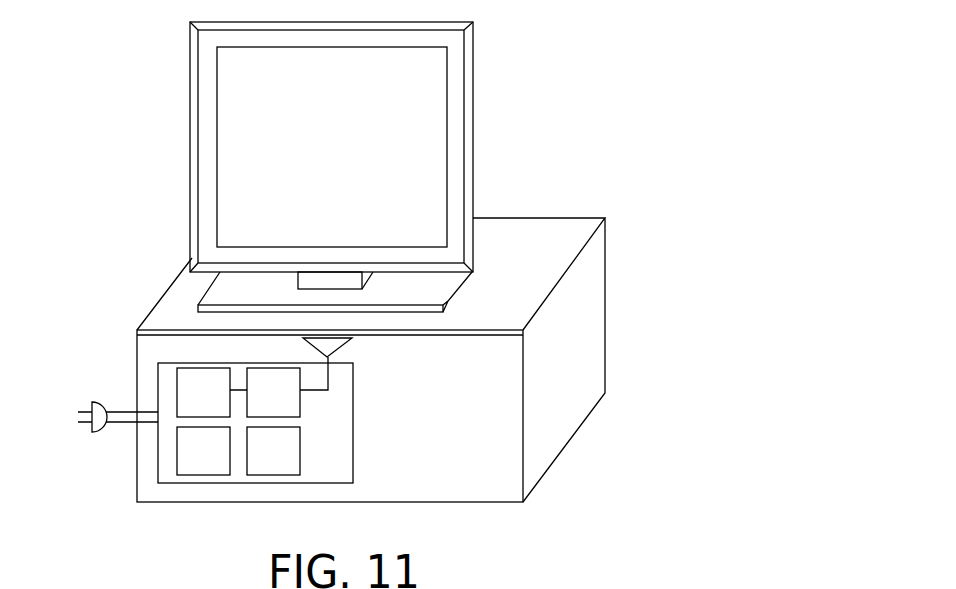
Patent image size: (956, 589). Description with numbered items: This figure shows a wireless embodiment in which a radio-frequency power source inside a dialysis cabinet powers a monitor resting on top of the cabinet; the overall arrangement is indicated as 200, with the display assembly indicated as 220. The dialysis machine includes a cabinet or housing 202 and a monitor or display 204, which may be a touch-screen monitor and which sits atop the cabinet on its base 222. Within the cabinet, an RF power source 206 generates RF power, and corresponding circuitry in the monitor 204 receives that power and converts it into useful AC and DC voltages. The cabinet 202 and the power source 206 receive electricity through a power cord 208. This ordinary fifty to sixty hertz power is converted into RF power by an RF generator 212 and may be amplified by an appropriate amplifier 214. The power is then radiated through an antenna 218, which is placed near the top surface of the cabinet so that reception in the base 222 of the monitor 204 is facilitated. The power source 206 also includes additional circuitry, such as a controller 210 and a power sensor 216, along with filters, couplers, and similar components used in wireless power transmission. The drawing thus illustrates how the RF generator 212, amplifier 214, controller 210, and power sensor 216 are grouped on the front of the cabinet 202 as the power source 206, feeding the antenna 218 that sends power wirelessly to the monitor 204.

The electronic system 200 is at (667, 290).
The cabinet or housing 202 is at (490, 503).
The monitor or display 204 is at (473, 112).
The RF power source 206 is at (432, 429).
The power cord 208 is at (108, 426).
The controller 210 is at (203, 477).
The RF generator 212 is at (177, 393).
The amplifier 214 is at (300, 410).
The power sensor 216 is at (300, 443).
The antenna 218 is at (345, 344).
The display unit 220 is at (578, 142).
The base 222 is at (455, 291).